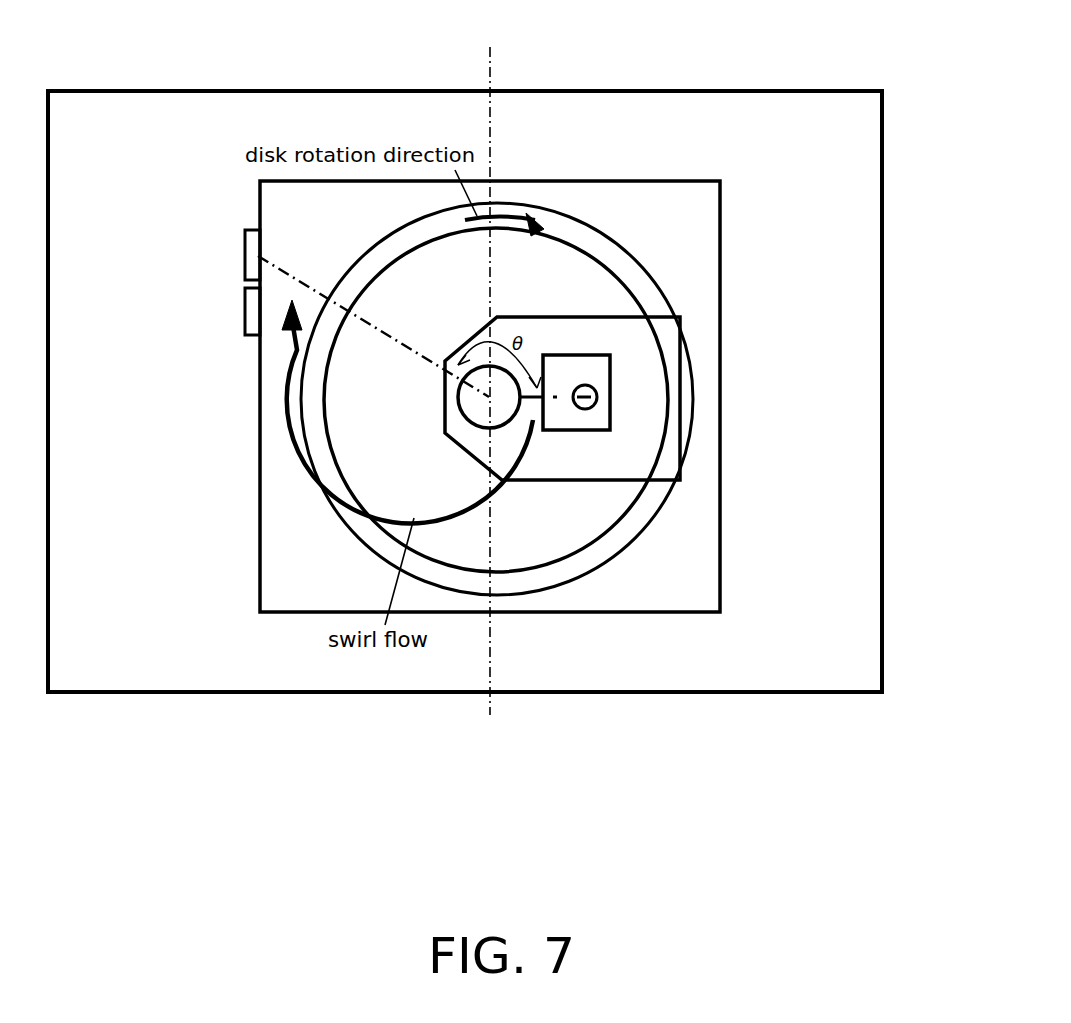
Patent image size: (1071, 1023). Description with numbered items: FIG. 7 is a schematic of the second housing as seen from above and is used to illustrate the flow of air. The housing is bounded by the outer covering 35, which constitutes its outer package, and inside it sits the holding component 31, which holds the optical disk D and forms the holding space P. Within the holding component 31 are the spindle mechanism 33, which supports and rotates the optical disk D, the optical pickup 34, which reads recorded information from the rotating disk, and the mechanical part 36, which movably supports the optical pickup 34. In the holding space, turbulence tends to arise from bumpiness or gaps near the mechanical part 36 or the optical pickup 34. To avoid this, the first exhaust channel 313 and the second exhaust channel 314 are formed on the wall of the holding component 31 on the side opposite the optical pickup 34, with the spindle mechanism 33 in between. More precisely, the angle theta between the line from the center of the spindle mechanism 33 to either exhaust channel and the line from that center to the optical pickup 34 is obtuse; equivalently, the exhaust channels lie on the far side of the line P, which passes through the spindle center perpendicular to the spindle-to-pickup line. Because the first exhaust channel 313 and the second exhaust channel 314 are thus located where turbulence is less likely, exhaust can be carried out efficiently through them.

The outer covering 35 is at (824, 130).
The holding component 31 is at (650, 222).
The mechanical part 36 is at (650, 358).
The optical pickup 34 is at (594, 407).
The spindle mechanism 33 is at (502, 427).
The second exhaust channel 314 is at (244, 231).
The first exhaust channel 313 is at (244, 314).
The disk D is at (588, 528).
The line P (holding space) P is at (487, 367).